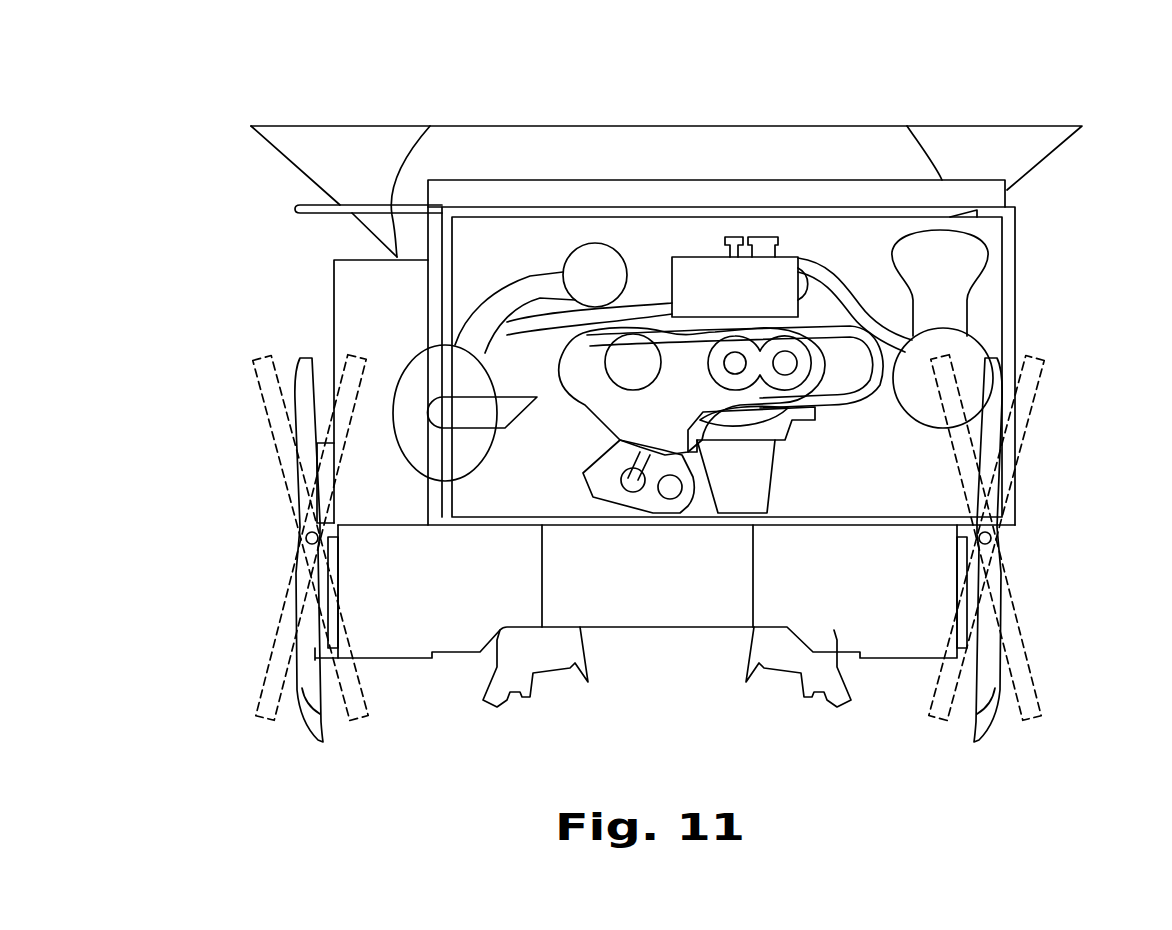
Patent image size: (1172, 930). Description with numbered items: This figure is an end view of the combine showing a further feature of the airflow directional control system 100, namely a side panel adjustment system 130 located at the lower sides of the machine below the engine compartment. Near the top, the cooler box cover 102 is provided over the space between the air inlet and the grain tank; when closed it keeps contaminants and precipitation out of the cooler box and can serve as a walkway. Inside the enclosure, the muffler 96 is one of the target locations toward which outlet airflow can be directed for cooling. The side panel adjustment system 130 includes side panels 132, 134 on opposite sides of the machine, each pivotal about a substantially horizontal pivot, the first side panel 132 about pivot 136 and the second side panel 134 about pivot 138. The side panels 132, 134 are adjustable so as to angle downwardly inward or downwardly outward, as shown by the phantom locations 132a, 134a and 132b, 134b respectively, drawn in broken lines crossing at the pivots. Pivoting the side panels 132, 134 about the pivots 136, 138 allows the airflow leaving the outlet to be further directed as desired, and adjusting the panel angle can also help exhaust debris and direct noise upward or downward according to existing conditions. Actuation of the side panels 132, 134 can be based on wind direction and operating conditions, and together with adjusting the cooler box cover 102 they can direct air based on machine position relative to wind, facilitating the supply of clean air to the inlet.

The airflow directional control system 100 is at (1060, 106).
The cooler box cover 102 is at (302, 204).
The muffler 96 is at (413, 367).
The side panel adjustment system 130 is at (216, 471).
The side panel 132 is at (313, 742).
The phantom location of side panel 132a is at (376, 736).
The phantom location of side panel 132b is at (257, 708).
The side panel 134 is at (988, 745).
The phantom location of side panel 134a is at (925, 738).
The phantom location of side panel 134b is at (1040, 708).
The pivot 136 is at (305, 538).
The pivot 138 is at (993, 540).